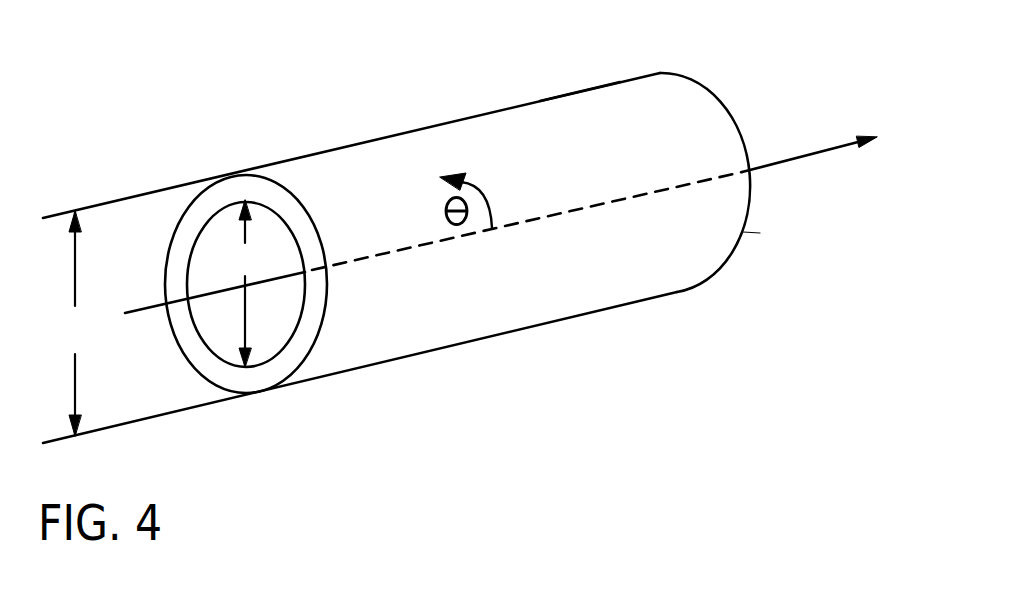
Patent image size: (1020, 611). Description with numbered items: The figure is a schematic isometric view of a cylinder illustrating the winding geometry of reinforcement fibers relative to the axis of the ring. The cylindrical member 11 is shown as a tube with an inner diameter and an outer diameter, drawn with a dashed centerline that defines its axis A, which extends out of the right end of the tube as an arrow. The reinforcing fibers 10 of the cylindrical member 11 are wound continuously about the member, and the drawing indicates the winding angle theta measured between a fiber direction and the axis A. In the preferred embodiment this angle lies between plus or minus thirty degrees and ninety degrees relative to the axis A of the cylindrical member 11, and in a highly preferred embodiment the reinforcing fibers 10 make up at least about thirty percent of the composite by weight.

The reinforcing fibers 10 is at (428, 148).
The cylindrical member 11 is at (562, 85).
The axis A is at (820, 148).